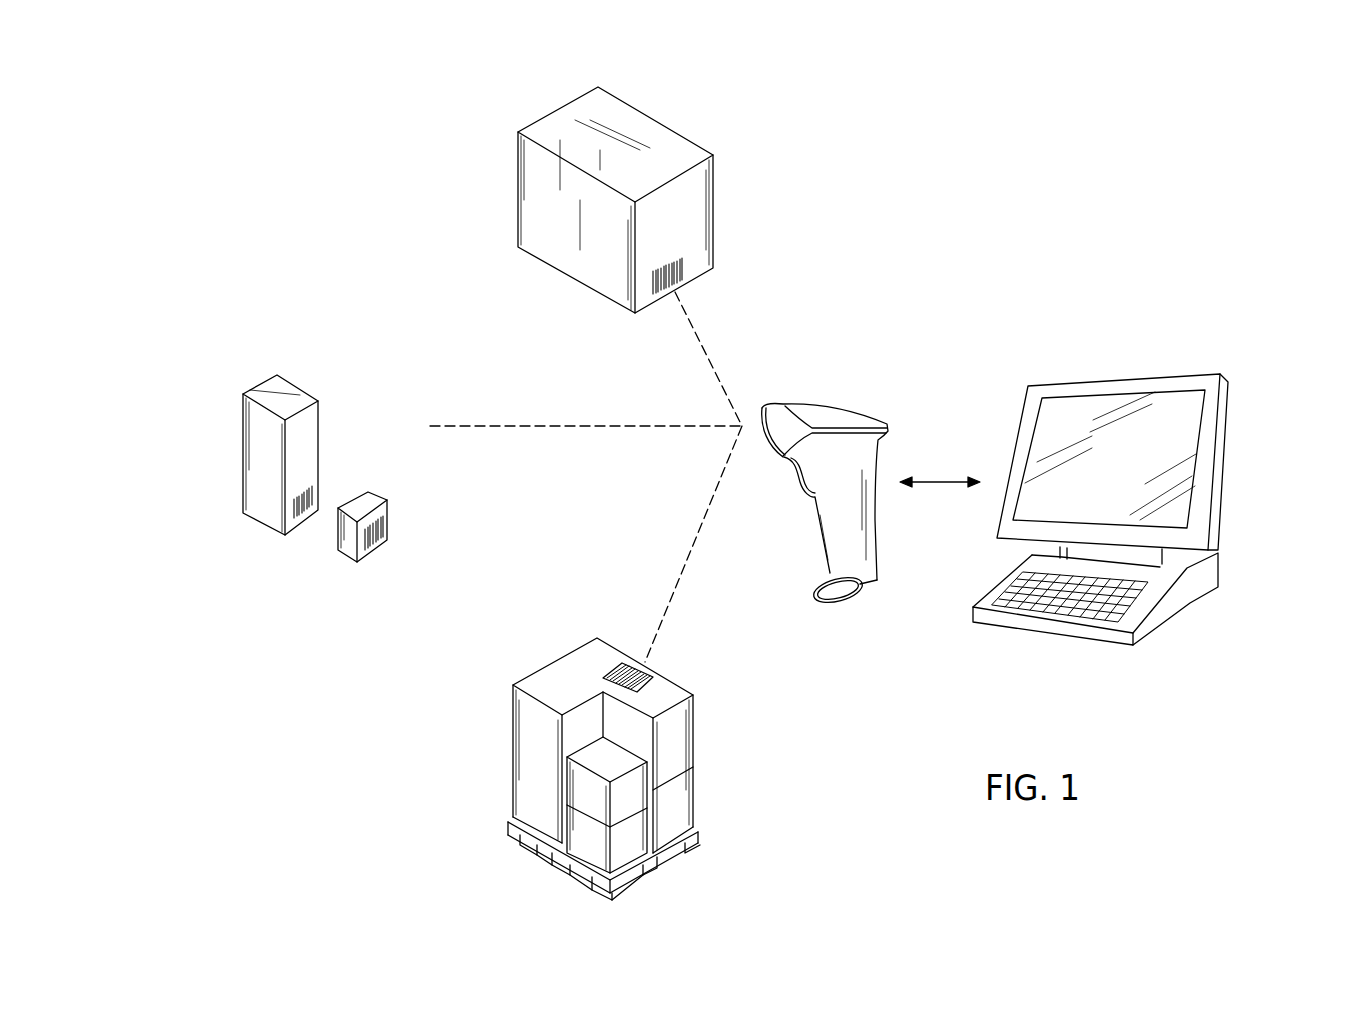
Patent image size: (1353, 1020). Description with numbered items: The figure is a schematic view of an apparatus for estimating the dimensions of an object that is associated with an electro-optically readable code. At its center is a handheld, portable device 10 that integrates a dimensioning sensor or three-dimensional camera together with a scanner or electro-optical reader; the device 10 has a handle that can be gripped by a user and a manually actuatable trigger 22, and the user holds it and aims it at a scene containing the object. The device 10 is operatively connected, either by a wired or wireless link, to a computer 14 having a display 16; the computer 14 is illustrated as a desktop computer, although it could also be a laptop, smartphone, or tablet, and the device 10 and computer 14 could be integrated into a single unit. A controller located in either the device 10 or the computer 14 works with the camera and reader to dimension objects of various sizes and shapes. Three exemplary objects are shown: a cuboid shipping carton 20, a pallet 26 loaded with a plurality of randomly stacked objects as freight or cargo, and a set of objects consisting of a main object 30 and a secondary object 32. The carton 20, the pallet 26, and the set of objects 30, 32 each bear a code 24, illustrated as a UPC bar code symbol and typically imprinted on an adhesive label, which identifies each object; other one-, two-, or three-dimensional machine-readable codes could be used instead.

The device 10 is at (852, 489).
The computer 14 is at (1138, 484).
The display 16 is at (1048, 435).
The cuboid shipping carton 20 is at (722, 211).
The trigger 22 is at (793, 485).
The code 24 is at (661, 291).
The pallet 26 is at (740, 774).
The main object 30 is at (357, 507).
The secondary object 32 is at (280, 390).